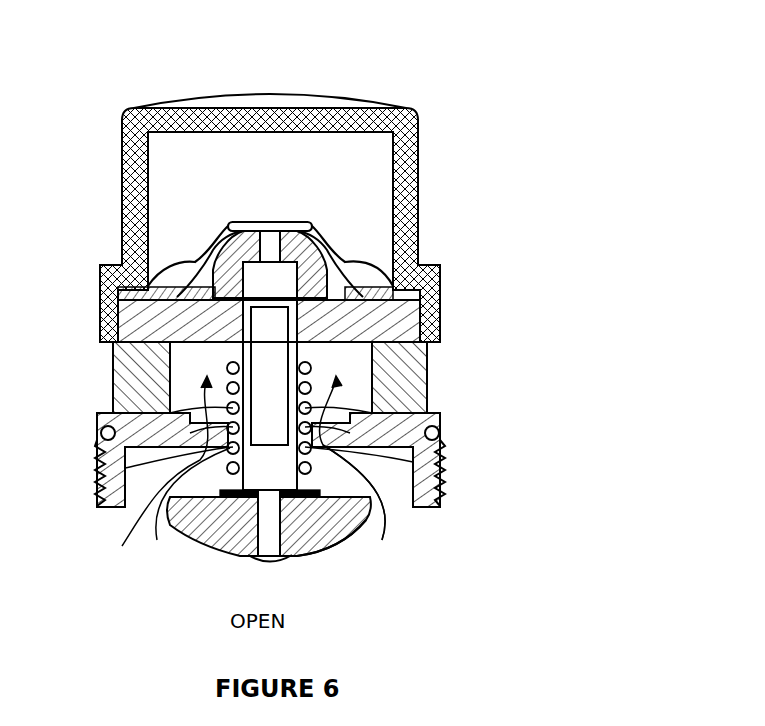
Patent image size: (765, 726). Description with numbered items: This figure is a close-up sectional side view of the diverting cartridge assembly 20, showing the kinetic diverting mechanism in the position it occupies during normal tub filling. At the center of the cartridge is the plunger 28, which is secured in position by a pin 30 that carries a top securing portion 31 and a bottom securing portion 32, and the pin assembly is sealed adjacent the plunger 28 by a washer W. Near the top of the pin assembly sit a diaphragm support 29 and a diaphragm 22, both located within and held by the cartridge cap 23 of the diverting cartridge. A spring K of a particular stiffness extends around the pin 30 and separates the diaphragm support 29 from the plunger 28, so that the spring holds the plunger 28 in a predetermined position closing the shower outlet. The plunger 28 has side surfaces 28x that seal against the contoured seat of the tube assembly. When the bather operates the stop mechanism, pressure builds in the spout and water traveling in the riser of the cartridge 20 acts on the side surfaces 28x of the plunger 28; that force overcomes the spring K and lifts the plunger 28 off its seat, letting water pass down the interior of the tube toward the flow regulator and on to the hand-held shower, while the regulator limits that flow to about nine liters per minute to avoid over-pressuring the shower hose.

The cartridge assembly 20 is at (455, 300).
The diaphragm 22 is at (335, 257).
The cartridge cap 23 is at (297, 108).
The plunger 28 is at (201, 537).
The side surfaces of the plunger 28x is at (330, 547).
The diaphragm support 29 is at (328, 237).
The pin 30 is at (268, 486).
The top securing portion 31 is at (275, 224).
The bottom securing portion 32 is at (264, 560).
The spring K is at (97, 497).
The washer W is at (154, 469).